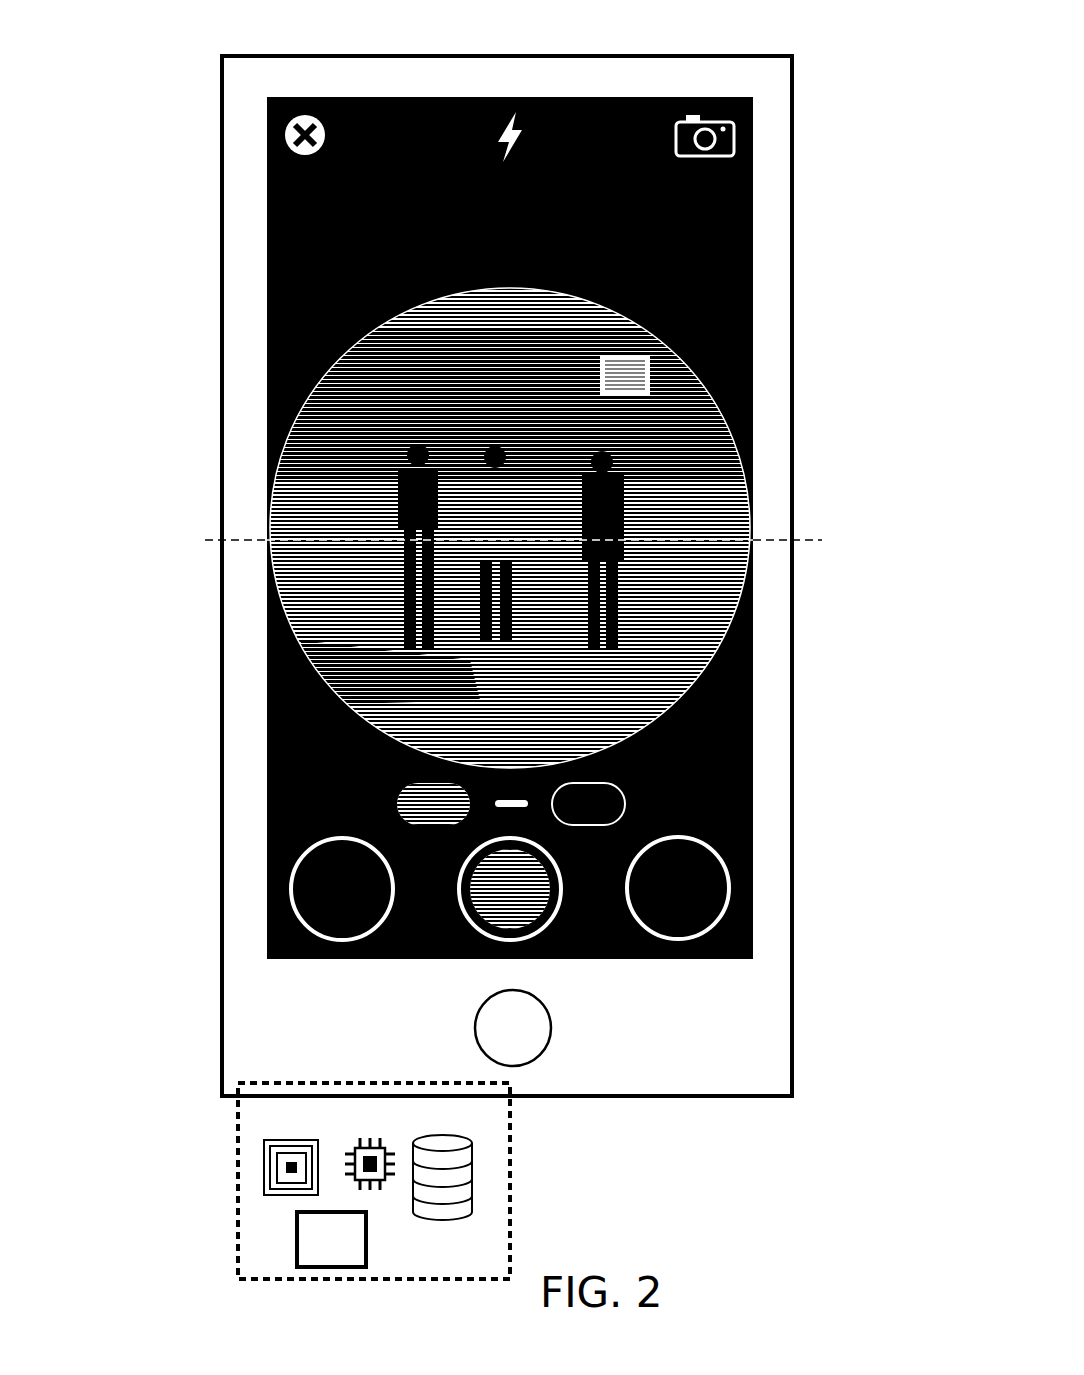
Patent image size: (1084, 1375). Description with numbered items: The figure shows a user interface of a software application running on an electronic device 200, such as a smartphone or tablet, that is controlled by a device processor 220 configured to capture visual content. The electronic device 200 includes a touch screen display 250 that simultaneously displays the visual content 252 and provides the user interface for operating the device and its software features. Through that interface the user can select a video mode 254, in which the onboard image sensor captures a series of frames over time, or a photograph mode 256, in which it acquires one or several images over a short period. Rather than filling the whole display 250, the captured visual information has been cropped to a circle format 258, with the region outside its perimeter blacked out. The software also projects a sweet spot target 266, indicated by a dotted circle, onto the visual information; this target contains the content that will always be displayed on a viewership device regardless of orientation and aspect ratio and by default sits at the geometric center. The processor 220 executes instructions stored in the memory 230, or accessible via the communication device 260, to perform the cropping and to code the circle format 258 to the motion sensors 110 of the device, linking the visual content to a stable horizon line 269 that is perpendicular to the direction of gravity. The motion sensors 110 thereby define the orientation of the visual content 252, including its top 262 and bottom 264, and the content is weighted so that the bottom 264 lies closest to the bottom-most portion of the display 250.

The electronic device 200 is at (514, 36).
The touch screen display 250 is at (268, 351).
The visual content 252 is at (455, 680).
The video mode 254 is at (398, 795).
The photograph mode 256 is at (625, 815).
The circle format 258 is at (750, 526).
The top of the visual content 262 is at (512, 312).
The bottom of the visual content 264 is at (513, 757).
The sweet spot target 266 is at (400, 508).
The horizon line 269 is at (484, 542).
The device processor 220 is at (365, 1153).
The memory 230 is at (447, 1182).
The communication device 260 is at (268, 1168).
The motion sensors 110 is at (374, 1181).